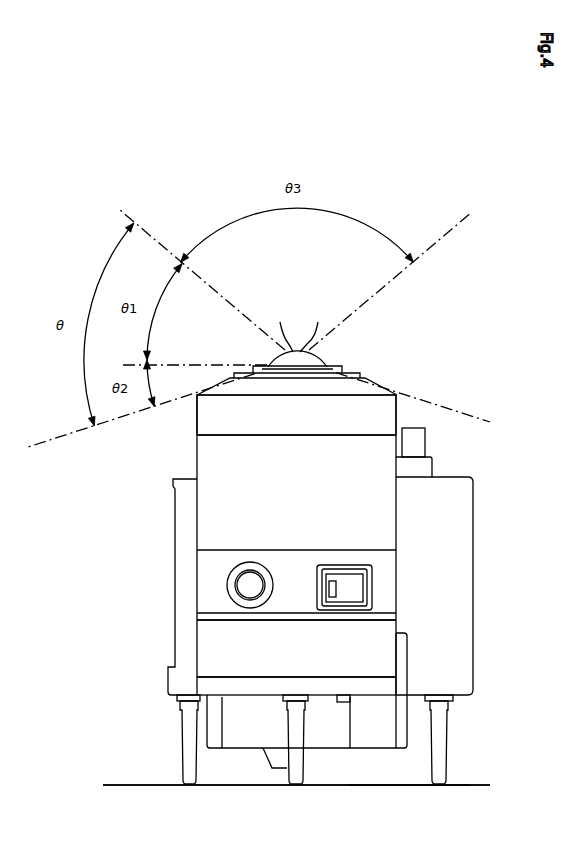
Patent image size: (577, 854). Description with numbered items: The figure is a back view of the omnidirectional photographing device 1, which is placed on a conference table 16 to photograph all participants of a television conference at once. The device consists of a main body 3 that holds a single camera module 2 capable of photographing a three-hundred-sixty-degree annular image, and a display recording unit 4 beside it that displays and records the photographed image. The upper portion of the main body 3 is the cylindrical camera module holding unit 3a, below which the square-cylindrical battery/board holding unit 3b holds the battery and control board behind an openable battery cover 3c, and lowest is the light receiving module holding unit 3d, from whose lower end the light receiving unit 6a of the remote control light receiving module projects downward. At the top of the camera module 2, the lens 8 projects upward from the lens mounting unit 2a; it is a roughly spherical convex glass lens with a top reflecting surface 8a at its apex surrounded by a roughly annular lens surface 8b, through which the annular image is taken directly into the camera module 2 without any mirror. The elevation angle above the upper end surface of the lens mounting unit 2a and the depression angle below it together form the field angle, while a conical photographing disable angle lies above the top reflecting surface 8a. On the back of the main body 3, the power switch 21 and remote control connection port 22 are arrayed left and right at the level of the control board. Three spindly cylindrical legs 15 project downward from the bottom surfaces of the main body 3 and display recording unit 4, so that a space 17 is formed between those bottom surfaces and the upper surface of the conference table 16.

The omnidirectional photographing device 1 is at (372, 189).
The camera module 2 is at (343, 371).
The lens mounting unit 2a is at (327, 363).
The main body 3 is at (197, 448).
The camera module holding unit 3a is at (197, 448).
The battery/board holding unit 3b is at (206, 628).
The battery cover 3c is at (306, 660).
The light receiving module holding unit 3d is at (235, 733).
The display recording unit 4 is at (466, 548).
The light receiving unit 6a is at (273, 762).
The lens 8 is at (320, 294).
The top reflecting surface 8a is at (311, 326).
The lens surface 8b is at (281, 326).
The legs 15 is at (182, 732).
The conference table 16 is at (375, 823).
The space 17 is at (410, 773).
The power switch 21 is at (350, 592).
The remote control connection port 22 is at (227, 582).